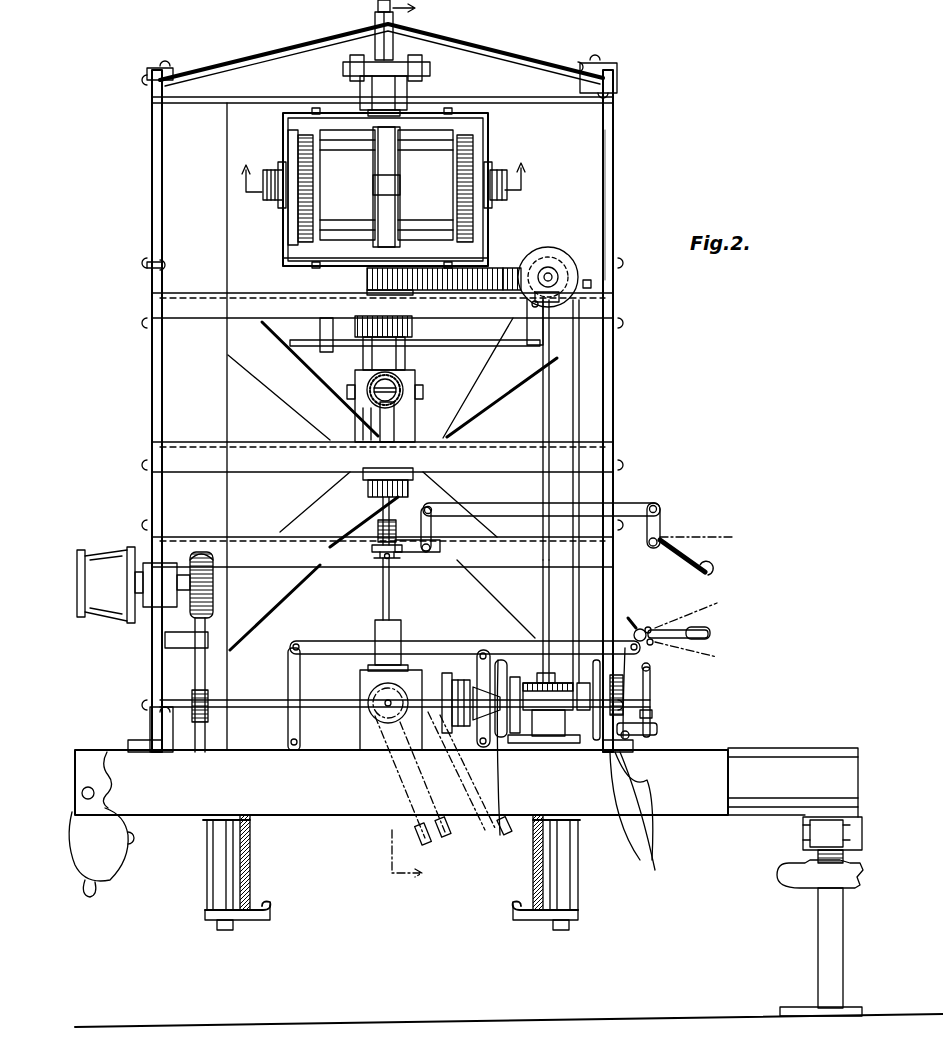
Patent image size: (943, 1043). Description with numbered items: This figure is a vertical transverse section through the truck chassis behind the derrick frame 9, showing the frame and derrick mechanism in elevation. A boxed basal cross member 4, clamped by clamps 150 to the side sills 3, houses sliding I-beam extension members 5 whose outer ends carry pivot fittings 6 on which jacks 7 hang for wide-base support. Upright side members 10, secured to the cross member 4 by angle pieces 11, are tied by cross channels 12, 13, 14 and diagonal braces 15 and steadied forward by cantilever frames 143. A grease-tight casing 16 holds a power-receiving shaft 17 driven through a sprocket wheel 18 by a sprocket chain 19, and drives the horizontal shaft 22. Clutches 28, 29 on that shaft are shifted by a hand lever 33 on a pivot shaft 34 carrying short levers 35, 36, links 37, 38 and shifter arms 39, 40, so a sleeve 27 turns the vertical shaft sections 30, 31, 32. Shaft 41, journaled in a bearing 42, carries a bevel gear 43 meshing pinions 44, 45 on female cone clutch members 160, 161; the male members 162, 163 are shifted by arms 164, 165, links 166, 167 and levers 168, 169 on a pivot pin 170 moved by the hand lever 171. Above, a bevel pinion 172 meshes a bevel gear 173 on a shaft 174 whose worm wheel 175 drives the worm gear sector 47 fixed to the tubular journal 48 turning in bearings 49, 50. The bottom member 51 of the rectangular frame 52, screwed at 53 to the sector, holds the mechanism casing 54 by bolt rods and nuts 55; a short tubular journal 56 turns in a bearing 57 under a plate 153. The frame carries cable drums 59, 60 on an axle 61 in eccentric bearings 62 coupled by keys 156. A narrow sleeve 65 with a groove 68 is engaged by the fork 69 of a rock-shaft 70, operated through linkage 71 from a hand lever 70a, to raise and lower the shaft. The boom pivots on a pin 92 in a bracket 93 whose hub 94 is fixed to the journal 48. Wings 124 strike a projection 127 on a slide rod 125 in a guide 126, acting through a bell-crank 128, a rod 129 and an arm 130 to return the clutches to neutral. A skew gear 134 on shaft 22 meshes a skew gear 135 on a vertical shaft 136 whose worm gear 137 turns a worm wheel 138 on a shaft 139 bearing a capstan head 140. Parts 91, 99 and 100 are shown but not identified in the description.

The side sills 3 is at (270, 876).
The basal cross member 4 is at (648, 825).
The I-beam extension member 5 is at (787, 748).
The pivot fitting 6 is at (810, 830).
The jack 7 is at (818, 915).
The fixed frame 9 is at (612, 205).
The upright side member 10 is at (150, 405).
The angle piece 11 is at (155, 715).
The cross channel 12 is at (260, 446).
The cross channel 13 is at (240, 322).
The top cross member 14 is at (520, 88).
The diagonal brace 15 is at (438, 492).
The grease-tight casing 16 is at (385, 750).
The power-receiving shaft 17 is at (393, 708).
The sprocket wheel 18 is at (392, 722).
The sprocket chain 19 is at (430, 836).
The horizontal shaft 22 is at (248, 708).
The sleeve 27 is at (401, 636).
The clutch coupling 28 is at (480, 722).
The clutch coupling 29 is at (455, 735).
The fore shaft section 30 is at (392, 592).
The middle shaft section 31 is at (383, 516).
The upper shaft section 32 is at (368, 268).
The hand lever 33 is at (712, 632).
The pivot shaft 34 is at (648, 628).
The short lever 35 is at (672, 650).
The short lever 36 is at (717, 603).
The link 37 is at (505, 660).
The link 38 is at (338, 640).
The shifter arm 39 is at (483, 655).
The shifter arm 40 is at (288, 664).
The vertical driving shaft 41 is at (550, 422).
The bearing 42 is at (555, 712).
The bevel gear 43 is at (553, 672).
The pinion 44 is at (585, 712).
The pinion 45 is at (515, 735).
The worm gear sector 47 is at (552, 248).
The tubular journal 48 is at (355, 400).
The bearing 49 is at (363, 360).
The bearing 50 is at (363, 478).
The bottom member 51 is at (292, 266).
The open rectangular frame 52 is at (490, 136).
The screws 53 is at (505, 266).
The mechanism casing 54 is at (420, 127).
The bolt rods and nuts 55 is at (316, 108).
The short tubular journal 56 is at (365, 95).
The bearing 57 is at (395, 45).
The cable drum 59 is at (347, 185).
The cable drum 60 is at (425, 185).
The common horizontal axle 61 is at (266, 200).
The eccentric bearing 62 is at (283, 160).
The narrow sleeve 65 is at (356, 530).
The circumferential groove 68 is at (380, 538).
The fork 69 is at (402, 550).
The rock-shaft 70 is at (434, 550).
The hand lever 70a is at (690, 558).
The linkage 71 is at (638, 503).
The bearing 91 is at (403, 385).
The horizontal pin 92 is at (398, 394).
The bracket 93 is at (365, 412).
The hub 94 is at (393, 415).
The roof bar 99 is at (330, 37).
The spindle column 100 is at (374, 28).
The wings 124 is at (287, 404).
The slide rod 125 is at (455, 345).
The guide 126 is at (333, 312).
The projection 127 is at (412, 328).
The bell-crank 128 is at (543, 330).
The rod 129 is at (580, 390).
The arm 130 is at (641, 811).
The skew gear 134 is at (210, 692).
The skew gear 135 is at (190, 696).
The vertical shaft 136 is at (195, 660).
The worm gear 137 is at (210, 552).
The worm wheel 138 is at (198, 550).
The shaft 139 is at (140, 570).
The capstan head 140 is at (100, 555).
The buttress cantilever frame 143 is at (617, 72).
The clamps 150 is at (233, 930).
The plate 153 is at (430, 62).
The keys 156 is at (277, 212).
The female cone clutch member 160 is at (625, 745).
The female cone clutch member 161 is at (527, 744).
The male cone clutch member 162 is at (623, 690).
The male cone clutch member 163 is at (500, 832).
The shifter arm 164 is at (600, 668).
The shifter arm 165 is at (496, 599).
The link 166 is at (649, 780).
The link 167 is at (550, 738).
The short lever 168 is at (645, 738).
The short lever 169 is at (632, 730).
The pivot pin 170 is at (652, 735).
The hand lever 171 is at (652, 672).
The bevel pinion 172 is at (592, 282).
The bevel gear 173 is at (560, 262).
The shaft 174 is at (558, 273).
The worm wheel 175 is at (553, 278).